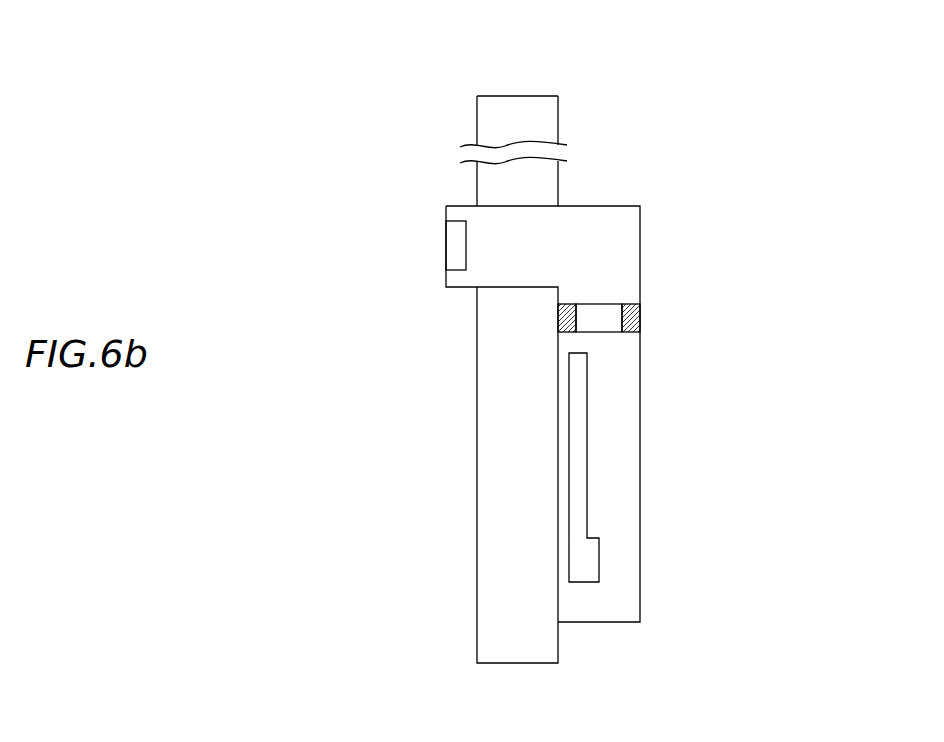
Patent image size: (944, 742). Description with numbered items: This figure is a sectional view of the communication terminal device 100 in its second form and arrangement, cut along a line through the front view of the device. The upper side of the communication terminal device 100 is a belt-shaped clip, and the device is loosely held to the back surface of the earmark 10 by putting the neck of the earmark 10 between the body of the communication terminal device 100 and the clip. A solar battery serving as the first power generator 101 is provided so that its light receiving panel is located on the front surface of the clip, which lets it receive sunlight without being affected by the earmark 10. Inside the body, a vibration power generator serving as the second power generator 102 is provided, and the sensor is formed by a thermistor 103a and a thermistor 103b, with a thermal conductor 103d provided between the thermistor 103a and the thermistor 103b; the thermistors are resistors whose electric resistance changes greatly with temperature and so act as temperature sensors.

The earmark 10 is at (493, 112).
The communication terminal device 100 is at (582, 228).
The first power generator 101 is at (458, 233).
The second power generator 102 is at (578, 570).
The thermistor 103a is at (637, 318).
The thermistor 103b is at (560, 318).
The thermal conductor 103d is at (598, 312).